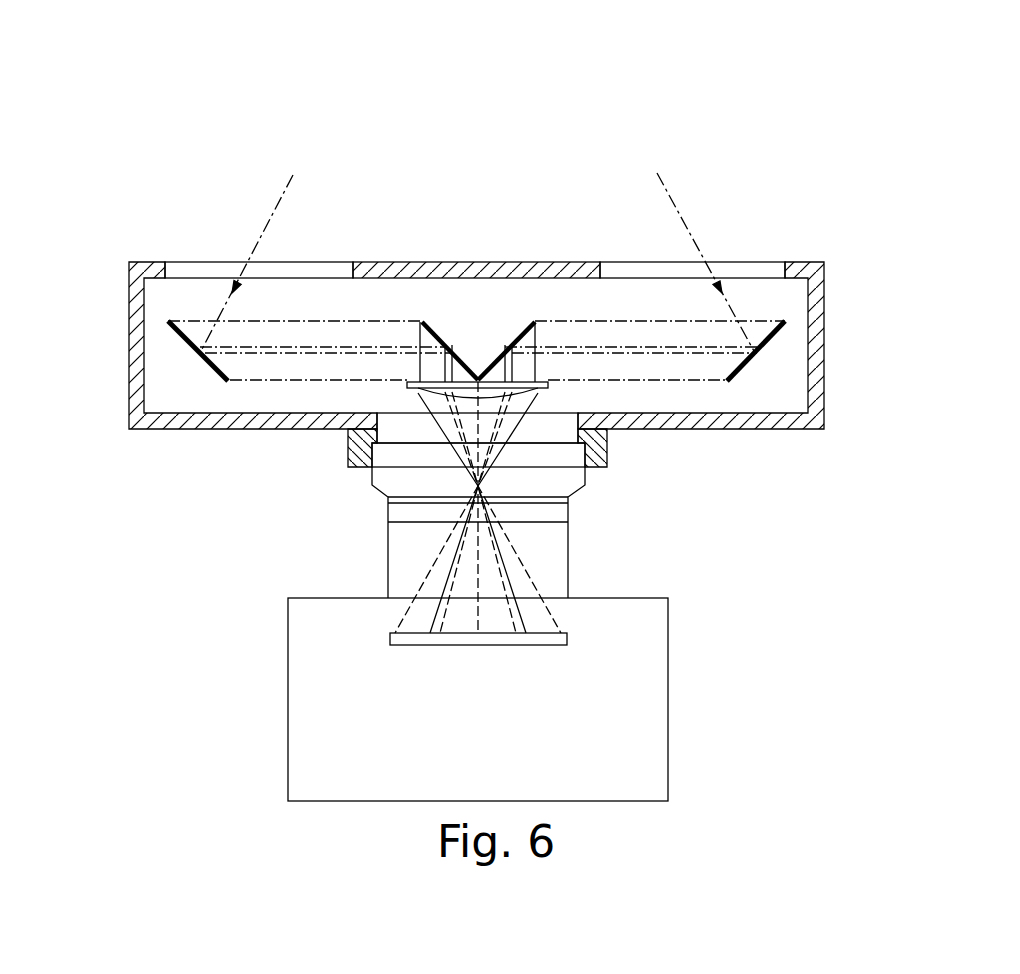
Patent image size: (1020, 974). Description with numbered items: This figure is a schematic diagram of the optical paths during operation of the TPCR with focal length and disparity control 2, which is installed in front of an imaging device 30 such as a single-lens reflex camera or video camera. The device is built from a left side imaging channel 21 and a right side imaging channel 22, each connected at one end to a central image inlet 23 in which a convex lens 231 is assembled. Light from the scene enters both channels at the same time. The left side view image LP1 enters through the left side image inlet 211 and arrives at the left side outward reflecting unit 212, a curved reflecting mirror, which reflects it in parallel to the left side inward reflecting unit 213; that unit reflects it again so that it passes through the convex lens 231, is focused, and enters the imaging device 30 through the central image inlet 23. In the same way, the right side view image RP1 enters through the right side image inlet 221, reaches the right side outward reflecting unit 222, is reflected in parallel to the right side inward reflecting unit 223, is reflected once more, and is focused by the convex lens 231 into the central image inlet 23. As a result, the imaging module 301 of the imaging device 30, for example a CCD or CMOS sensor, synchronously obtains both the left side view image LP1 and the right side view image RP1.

The TPCR with focal length and disparity control 2 is at (128, 348).
The left side imaging channel 21 is at (273, 362).
The right side imaging channel 22 is at (645, 365).
The central image inlet 23 is at (545, 430).
The imaging device 30 is at (287, 698).
The left side image inlet 211 is at (195, 270).
The left side outward reflecting unit 212 is at (205, 352).
The left side inward reflecting unit 213 is at (447, 346).
The right side image inlet 221 is at (738, 268).
The right side outward reflecting unit 222 is at (757, 353).
The right side inward reflecting unit 223 is at (505, 352).
The convex lens 231 is at (420, 390).
The imaging module 301 is at (398, 642).
The left side view image LP1 is at (293, 175).
The right side view image RP1 is at (657, 173).